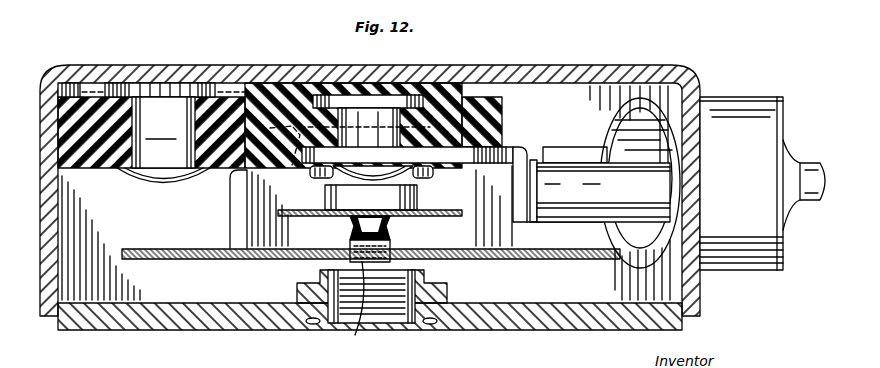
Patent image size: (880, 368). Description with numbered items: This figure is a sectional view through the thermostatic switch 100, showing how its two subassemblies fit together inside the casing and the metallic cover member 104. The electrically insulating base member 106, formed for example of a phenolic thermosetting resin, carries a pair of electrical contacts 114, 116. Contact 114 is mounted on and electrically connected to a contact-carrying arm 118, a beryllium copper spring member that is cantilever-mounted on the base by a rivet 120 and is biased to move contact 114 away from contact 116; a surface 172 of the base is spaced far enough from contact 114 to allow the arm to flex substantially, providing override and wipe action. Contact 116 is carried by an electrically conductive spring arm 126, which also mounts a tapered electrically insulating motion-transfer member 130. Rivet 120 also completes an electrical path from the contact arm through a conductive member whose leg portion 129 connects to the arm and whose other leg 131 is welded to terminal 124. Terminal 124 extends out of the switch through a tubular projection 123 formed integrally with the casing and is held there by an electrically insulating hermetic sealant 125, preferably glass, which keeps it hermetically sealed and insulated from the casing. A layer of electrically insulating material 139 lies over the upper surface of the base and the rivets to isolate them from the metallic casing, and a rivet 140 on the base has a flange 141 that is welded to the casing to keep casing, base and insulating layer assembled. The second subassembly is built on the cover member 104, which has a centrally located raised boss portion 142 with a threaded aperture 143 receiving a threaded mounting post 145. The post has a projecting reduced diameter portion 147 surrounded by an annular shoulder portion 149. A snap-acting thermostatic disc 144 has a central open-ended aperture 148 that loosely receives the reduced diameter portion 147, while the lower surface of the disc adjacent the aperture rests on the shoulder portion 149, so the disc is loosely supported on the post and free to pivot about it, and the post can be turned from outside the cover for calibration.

The switch 100 is at (697, 40).
The cover member 104 is at (175, 320).
The base member 106 is at (102, 172).
The electrical contact 114 is at (308, 175).
The electrical contact 116 is at (410, 196).
The contact-carrying arm 118 is at (460, 172).
The rivet 120 is at (365, 120).
The tubular projection 123 is at (748, 102).
The terminal 124 is at (624, 196).
The hermetic sealant 125 is at (788, 212).
The spring arm 126 is at (316, 212).
The leg portion 129 is at (520, 183).
The motion-transfer member 130 is at (348, 232).
The leg 131 is at (575, 152).
The layer of electrically insulating material 139 is at (447, 78).
The rivet 140 is at (163, 132).
The flange 141 is at (146, 88).
The boss portion 142 is at (432, 271).
The threaded aperture 143 is at (332, 322).
The snap-acting thermostatic disc 144 is at (198, 250).
The threaded mounting post 145 is at (376, 300).
The reduced diameter portion 147 is at (400, 245).
The aperture 148 is at (318, 272).
The shoulder portion 149 is at (344, 309).
The surface 172 is at (336, 142).